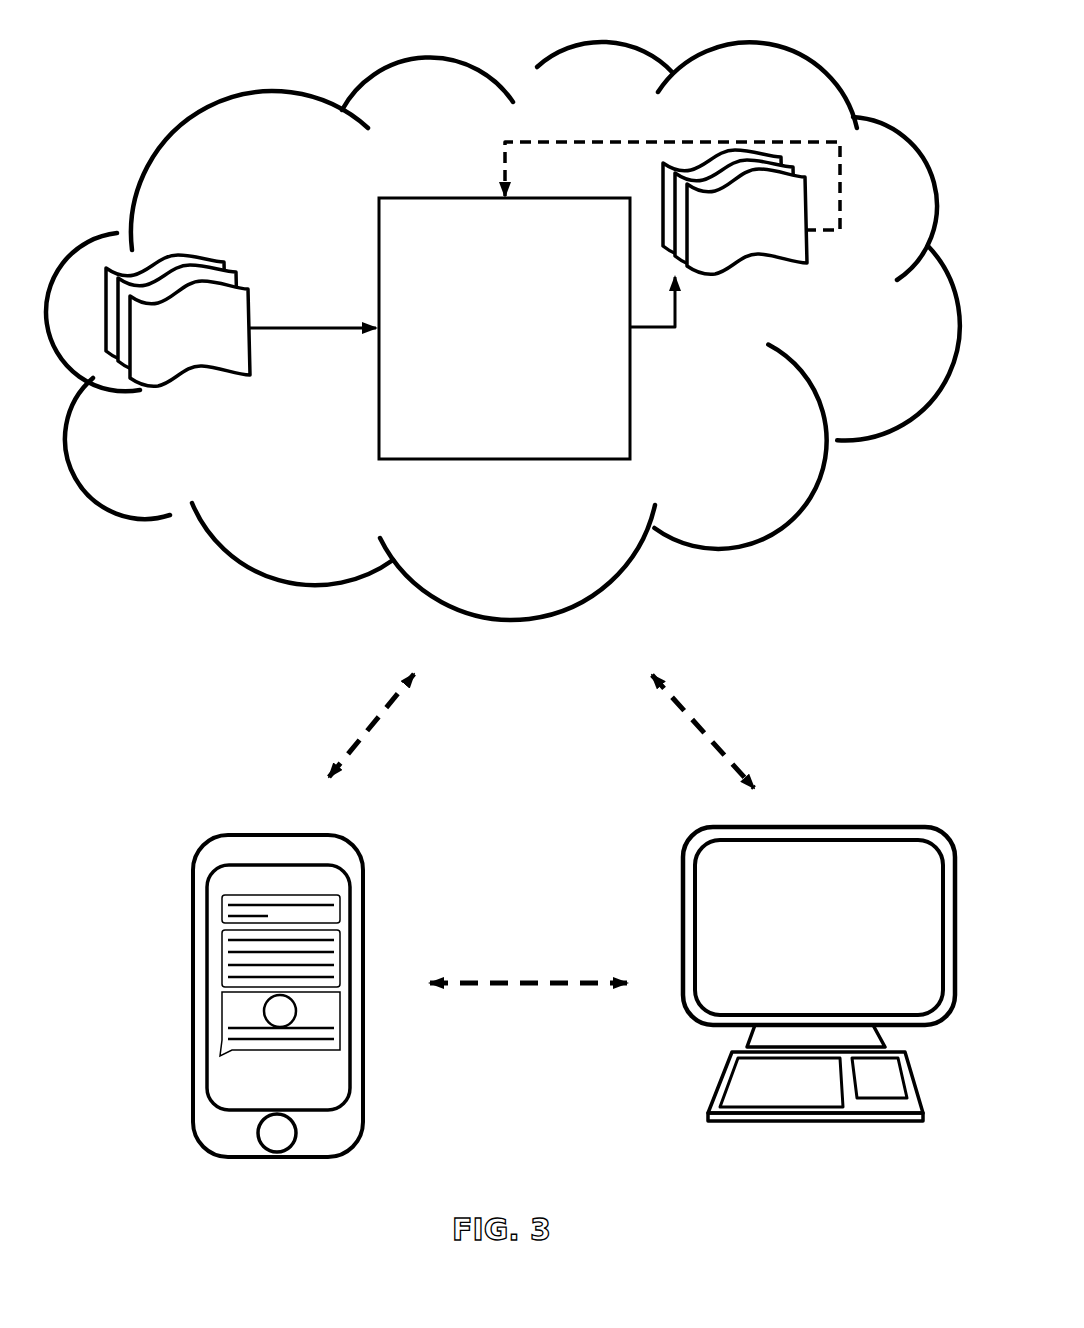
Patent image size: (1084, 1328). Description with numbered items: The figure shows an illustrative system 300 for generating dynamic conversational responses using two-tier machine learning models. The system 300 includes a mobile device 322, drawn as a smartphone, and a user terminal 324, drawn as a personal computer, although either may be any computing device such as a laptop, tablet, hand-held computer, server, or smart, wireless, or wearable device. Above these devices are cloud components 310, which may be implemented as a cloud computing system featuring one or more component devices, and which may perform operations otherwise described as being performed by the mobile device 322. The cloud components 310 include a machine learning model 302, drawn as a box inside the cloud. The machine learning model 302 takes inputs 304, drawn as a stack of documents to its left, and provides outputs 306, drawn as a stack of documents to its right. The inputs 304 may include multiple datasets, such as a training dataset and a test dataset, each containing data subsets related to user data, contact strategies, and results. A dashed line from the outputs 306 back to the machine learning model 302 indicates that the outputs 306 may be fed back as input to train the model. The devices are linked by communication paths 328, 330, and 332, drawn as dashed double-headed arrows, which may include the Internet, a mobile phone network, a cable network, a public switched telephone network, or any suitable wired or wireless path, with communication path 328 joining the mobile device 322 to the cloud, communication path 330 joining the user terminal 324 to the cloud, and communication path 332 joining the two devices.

The system 300 is at (521, 37).
The machine learning model 302 is at (584, 343).
The inputs 304 is at (197, 256).
The outputs 306 is at (784, 257).
The cloud components 310 is at (803, 103).
The mobile device 322 is at (267, 811).
The user terminal 324 is at (812, 818).
The communication path 328 is at (343, 695).
The communication path 330 is at (714, 683).
The communication path 332 is at (518, 955).